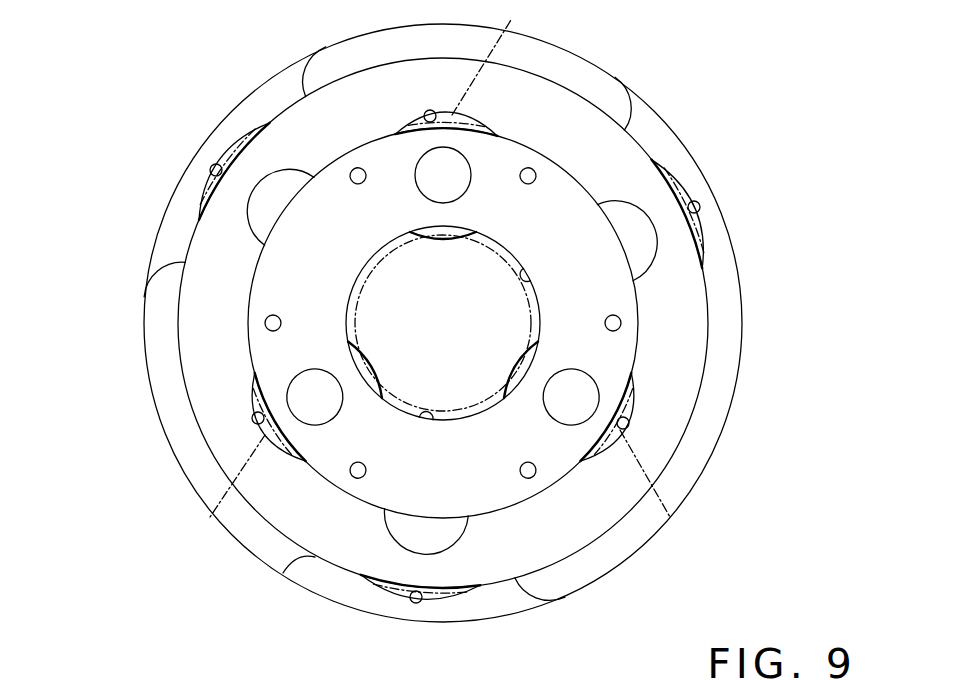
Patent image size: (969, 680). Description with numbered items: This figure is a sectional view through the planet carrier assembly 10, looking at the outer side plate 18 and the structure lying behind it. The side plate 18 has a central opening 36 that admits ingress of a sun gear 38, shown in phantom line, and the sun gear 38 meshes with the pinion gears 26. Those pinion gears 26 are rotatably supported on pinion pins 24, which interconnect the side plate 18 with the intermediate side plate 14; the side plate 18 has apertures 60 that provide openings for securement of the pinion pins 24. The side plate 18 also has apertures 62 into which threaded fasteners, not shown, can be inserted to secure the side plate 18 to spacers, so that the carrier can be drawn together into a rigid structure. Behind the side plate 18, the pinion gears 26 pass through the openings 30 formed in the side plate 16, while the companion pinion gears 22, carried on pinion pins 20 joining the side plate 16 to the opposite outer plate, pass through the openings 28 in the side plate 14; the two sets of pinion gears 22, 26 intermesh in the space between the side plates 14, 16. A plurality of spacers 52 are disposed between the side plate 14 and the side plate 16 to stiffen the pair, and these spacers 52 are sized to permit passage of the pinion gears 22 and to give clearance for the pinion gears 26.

The planet carrier assembly 10 is at (703, 90).
The side plate 14 is at (742, 290).
The side plate 16 is at (700, 421).
The side plate 18 is at (247, 269).
The pinion pins 20 is at (263, 212).
The pinion gears 22 is at (243, 140).
The pinion pins 24 is at (458, 165).
The pinion gears 26 is at (185, 528).
The openings 28 is at (210, 168).
The openings 30 is at (423, 113).
The central opening 36 is at (519, 277).
The sun gear 38 is at (360, 280).
The spacers 52 is at (603, 83).
The apertures 60 is at (426, 160).
The apertures 62 is at (355, 172).